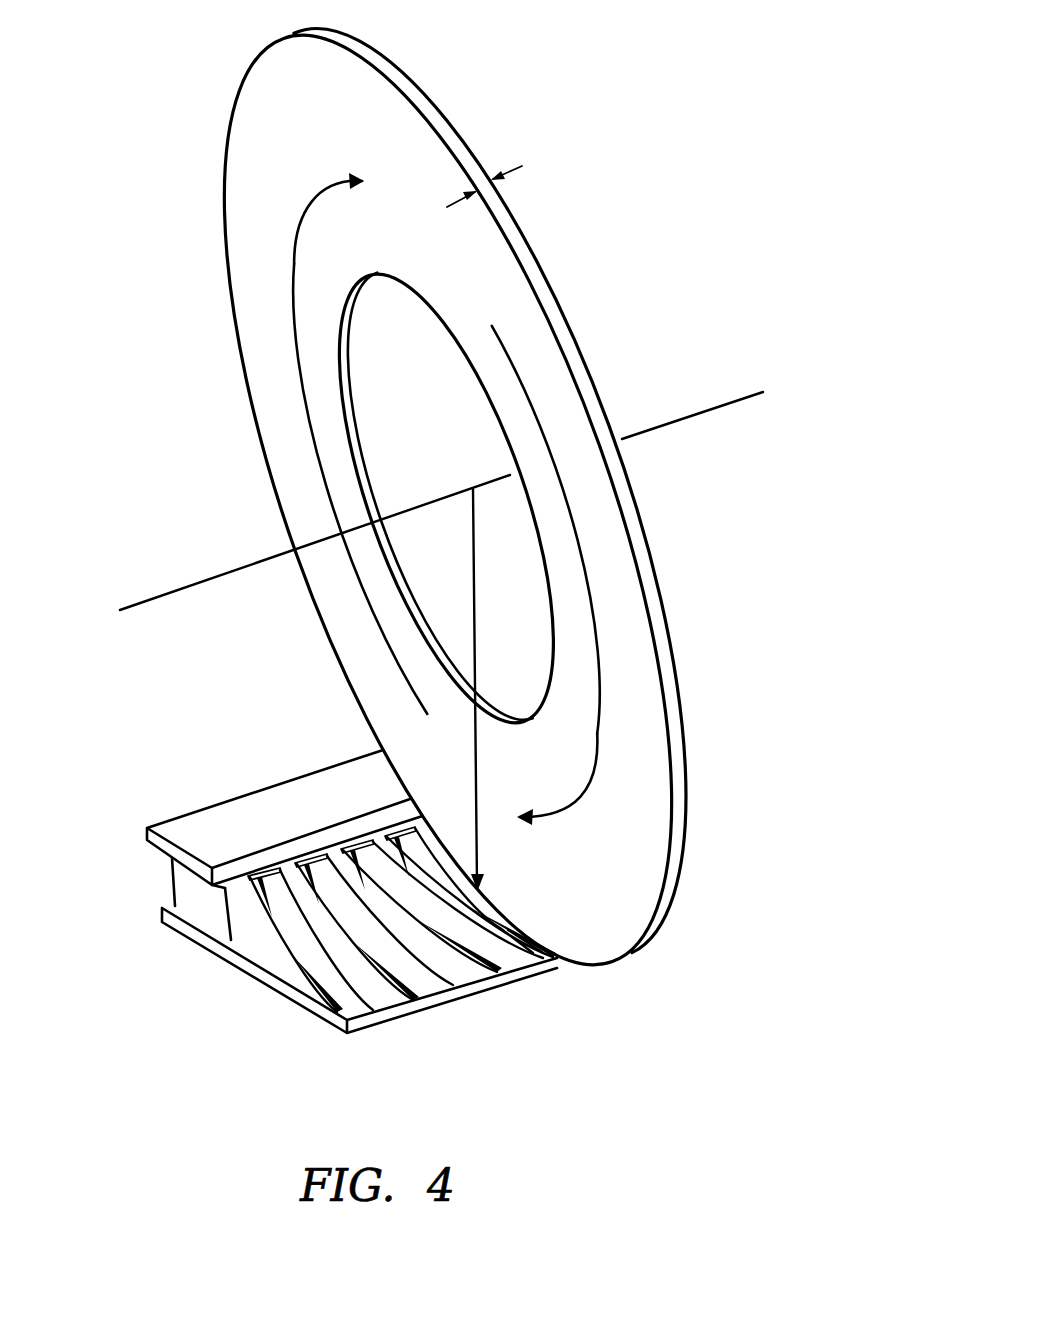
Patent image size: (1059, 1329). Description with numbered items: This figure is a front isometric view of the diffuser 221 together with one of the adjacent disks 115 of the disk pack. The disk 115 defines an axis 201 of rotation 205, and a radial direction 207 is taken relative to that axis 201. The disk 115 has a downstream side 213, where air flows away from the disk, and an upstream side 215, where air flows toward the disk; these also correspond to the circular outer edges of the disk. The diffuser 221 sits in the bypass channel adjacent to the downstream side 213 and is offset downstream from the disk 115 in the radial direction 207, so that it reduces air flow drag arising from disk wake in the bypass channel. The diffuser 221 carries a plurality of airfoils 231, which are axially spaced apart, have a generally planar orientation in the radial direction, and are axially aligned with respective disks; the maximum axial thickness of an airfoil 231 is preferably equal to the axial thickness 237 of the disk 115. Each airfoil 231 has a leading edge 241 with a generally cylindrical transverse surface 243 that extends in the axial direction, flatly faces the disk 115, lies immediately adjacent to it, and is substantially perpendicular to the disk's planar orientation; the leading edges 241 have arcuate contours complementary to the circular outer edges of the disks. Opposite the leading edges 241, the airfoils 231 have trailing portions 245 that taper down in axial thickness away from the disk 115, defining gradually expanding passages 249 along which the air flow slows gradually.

The disk 115 is at (437, 105).
The axial thickness 237 is at (505, 176).
The rotation 205 is at (292, 261).
The upstream side 215 is at (233, 326).
The axis 201 is at (223, 575).
The downstream side 213 is at (369, 731).
The radial direction 207 is at (476, 792).
The diffuser 221 is at (181, 769).
The gradually expanding passages 249 is at (348, 838).
The trailing portions 245 is at (170, 880).
The airfoils 231 is at (256, 938).
The leading edge 241 is at (489, 908).
The transverse surface 243 is at (480, 950).